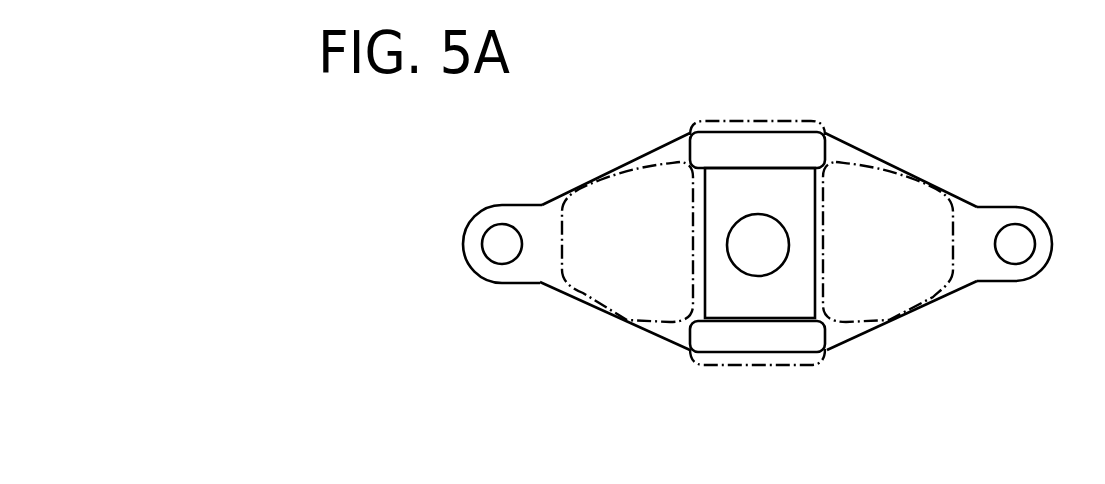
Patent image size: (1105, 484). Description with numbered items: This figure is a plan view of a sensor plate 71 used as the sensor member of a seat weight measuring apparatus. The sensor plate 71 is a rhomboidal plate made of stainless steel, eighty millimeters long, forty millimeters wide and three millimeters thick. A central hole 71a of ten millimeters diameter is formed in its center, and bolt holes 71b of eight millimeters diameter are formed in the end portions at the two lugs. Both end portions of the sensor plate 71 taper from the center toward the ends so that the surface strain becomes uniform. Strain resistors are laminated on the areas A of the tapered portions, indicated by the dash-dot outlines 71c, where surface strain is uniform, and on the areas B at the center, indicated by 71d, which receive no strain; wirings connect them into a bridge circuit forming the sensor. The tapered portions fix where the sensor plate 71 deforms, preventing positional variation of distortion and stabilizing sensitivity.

The sensor plate 71 is at (903, 169).
The central hole 71a is at (752, 222).
The bolt holes 71b is at (486, 238).
The A regions 71c is at (630, 292).
The B regions 71d is at (710, 145).